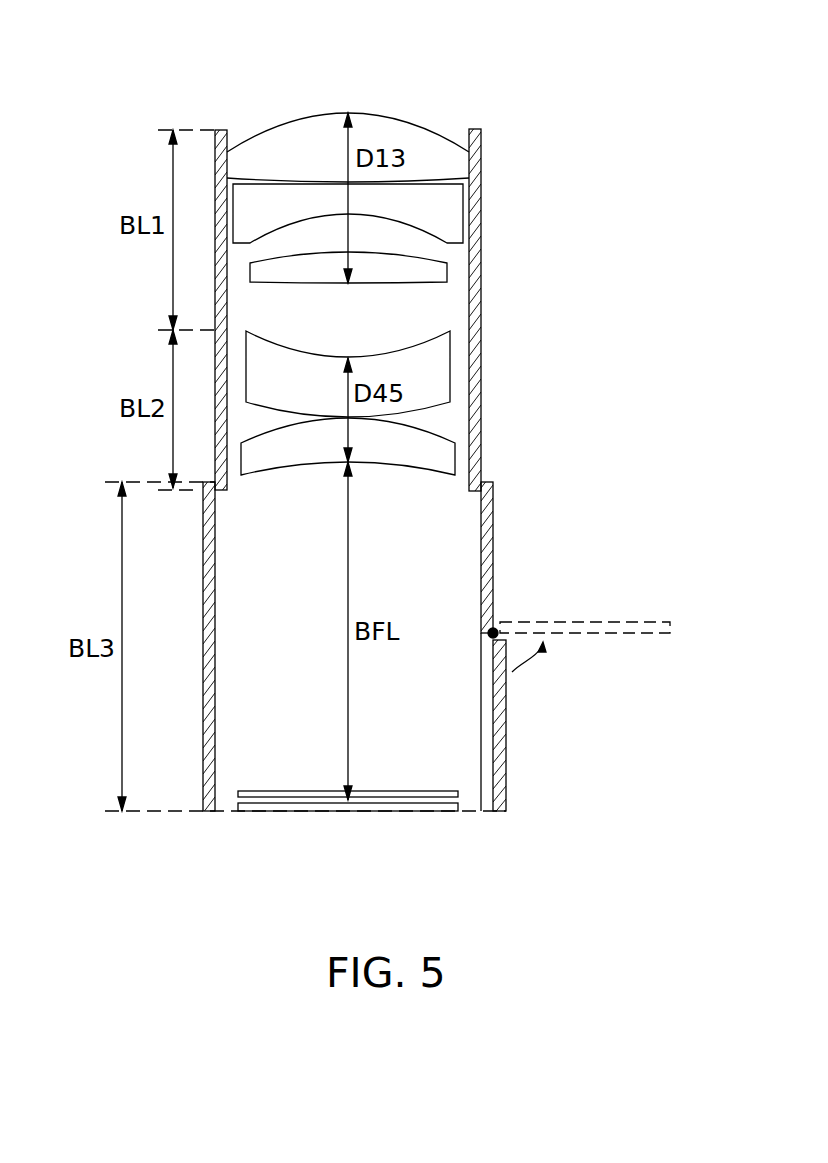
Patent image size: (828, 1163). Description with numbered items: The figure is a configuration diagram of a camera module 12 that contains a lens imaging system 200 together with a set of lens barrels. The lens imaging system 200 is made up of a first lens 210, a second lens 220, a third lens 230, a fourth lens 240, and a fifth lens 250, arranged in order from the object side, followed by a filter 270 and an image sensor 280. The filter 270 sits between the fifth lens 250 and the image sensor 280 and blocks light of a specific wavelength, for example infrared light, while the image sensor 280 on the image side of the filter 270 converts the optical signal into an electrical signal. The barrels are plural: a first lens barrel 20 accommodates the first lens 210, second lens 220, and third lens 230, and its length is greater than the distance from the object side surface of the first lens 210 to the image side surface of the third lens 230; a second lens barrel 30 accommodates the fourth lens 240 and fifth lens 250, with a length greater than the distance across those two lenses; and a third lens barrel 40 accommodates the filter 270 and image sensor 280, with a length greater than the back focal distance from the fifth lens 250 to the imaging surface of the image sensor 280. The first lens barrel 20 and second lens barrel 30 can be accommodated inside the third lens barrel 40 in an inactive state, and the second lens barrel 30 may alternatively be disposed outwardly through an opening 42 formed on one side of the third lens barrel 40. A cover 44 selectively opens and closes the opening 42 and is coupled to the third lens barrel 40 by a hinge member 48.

The camera module 12 is at (580, 213).
The lens imaging system 200 is at (418, 80).
The first lens barrel 20 is at (478, 236).
The second lens barrel 30 is at (480, 300).
The first lens 210 is at (435, 158).
The second lens 220 is at (428, 207).
The third lens 230 is at (413, 268).
The fourth lens 240 is at (432, 362).
The fifth lens 250 is at (435, 433).
The third lens barrel 40 is at (203, 575).
The opening 42 is at (488, 690).
The cover 44 is at (507, 740).
The hinge member 48 is at (496, 626).
The filter 270 is at (291, 798).
The image sensor 280 is at (386, 812).